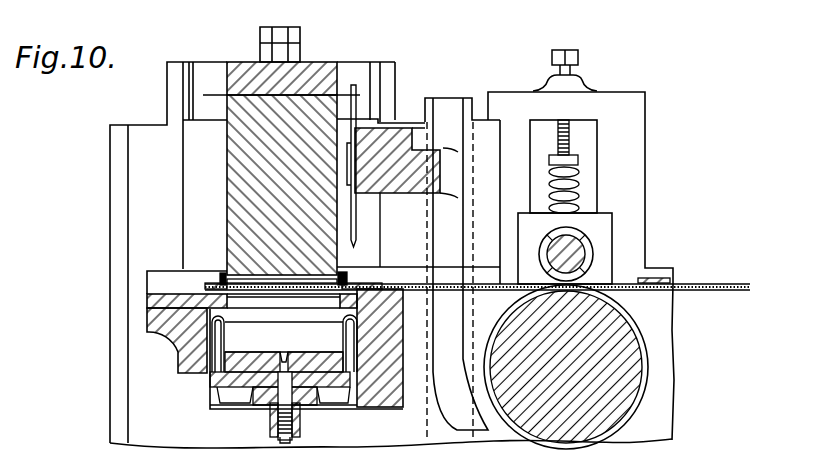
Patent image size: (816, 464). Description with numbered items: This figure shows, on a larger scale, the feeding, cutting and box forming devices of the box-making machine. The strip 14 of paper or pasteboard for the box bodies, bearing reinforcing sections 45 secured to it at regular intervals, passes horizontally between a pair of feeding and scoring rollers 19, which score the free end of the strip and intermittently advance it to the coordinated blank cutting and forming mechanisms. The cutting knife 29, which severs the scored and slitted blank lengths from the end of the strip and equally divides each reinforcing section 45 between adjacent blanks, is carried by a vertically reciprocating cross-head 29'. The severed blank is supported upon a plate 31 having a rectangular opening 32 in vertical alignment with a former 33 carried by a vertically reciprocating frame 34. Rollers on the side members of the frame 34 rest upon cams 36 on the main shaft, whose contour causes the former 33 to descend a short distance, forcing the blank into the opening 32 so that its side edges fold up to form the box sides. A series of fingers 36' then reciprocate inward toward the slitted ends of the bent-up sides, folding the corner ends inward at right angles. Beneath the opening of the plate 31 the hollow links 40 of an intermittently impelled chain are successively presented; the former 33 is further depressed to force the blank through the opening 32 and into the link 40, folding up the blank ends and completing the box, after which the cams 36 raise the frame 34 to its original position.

The strip 14 is at (723, 283).
The feeding and scoring rollers 19 is at (580, 252).
The cutting knife 29 is at (381, 176).
The cross-head 29' is at (406, 128).
The plate 31 is at (147, 295).
The rectangular opening 32 is at (247, 300).
The former 33 is at (247, 212).
The vertically-reciprocating frame 34 is at (327, 68).
The cams 36 is at (283, 418).
The fingers 36' is at (291, 318).
The hollow links 40 is at (220, 339).
The reinforcing sections 45 is at (367, 283).